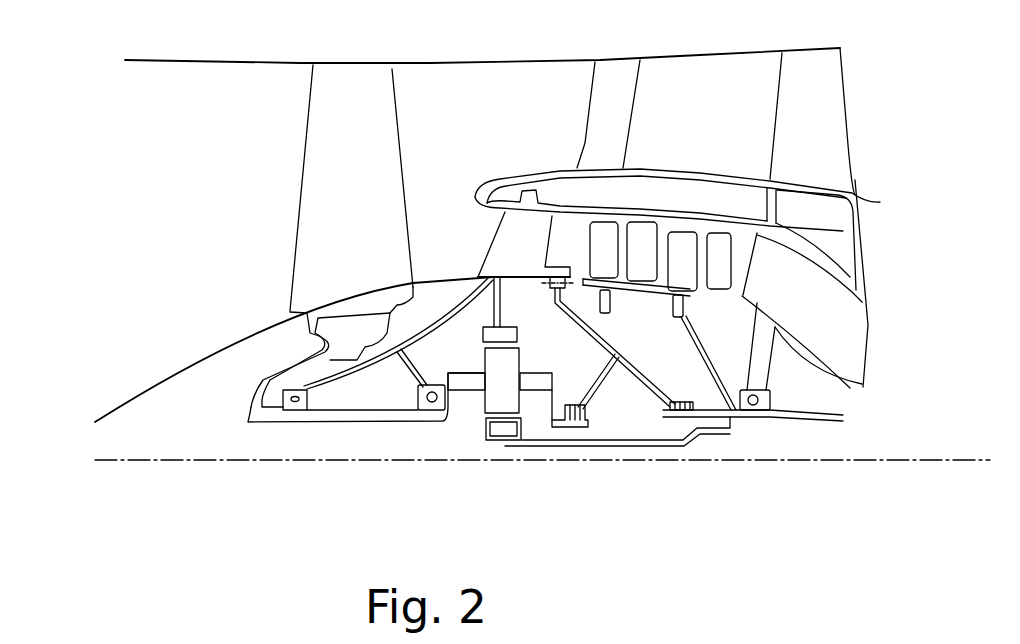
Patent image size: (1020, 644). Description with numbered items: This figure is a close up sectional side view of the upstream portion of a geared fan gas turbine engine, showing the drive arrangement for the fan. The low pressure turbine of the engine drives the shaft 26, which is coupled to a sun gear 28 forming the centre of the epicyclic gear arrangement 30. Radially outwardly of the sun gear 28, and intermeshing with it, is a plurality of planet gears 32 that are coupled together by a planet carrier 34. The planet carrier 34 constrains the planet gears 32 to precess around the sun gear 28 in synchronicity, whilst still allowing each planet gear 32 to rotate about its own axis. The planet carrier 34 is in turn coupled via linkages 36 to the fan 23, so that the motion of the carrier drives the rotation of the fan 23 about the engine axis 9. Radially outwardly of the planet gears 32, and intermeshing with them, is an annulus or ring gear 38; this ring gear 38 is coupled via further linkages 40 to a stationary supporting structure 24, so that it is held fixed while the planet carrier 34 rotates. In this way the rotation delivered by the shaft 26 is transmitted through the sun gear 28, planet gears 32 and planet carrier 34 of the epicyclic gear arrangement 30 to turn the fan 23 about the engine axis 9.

The engine axis 9 is at (278, 462).
The fan 23 is at (317, 190).
The stationary supporting structure 24 is at (510, 244).
The shaft 26 is at (647, 442).
The sun gear 28 is at (503, 428).
The epicyclic gear arrangement 30 is at (455, 400).
The planet gears 32 is at (490, 398).
The planet carrier 34 is at (542, 415).
The linkages 36 is at (442, 430).
The ring gear 38 is at (483, 336).
The linkages 40 is at (505, 310).